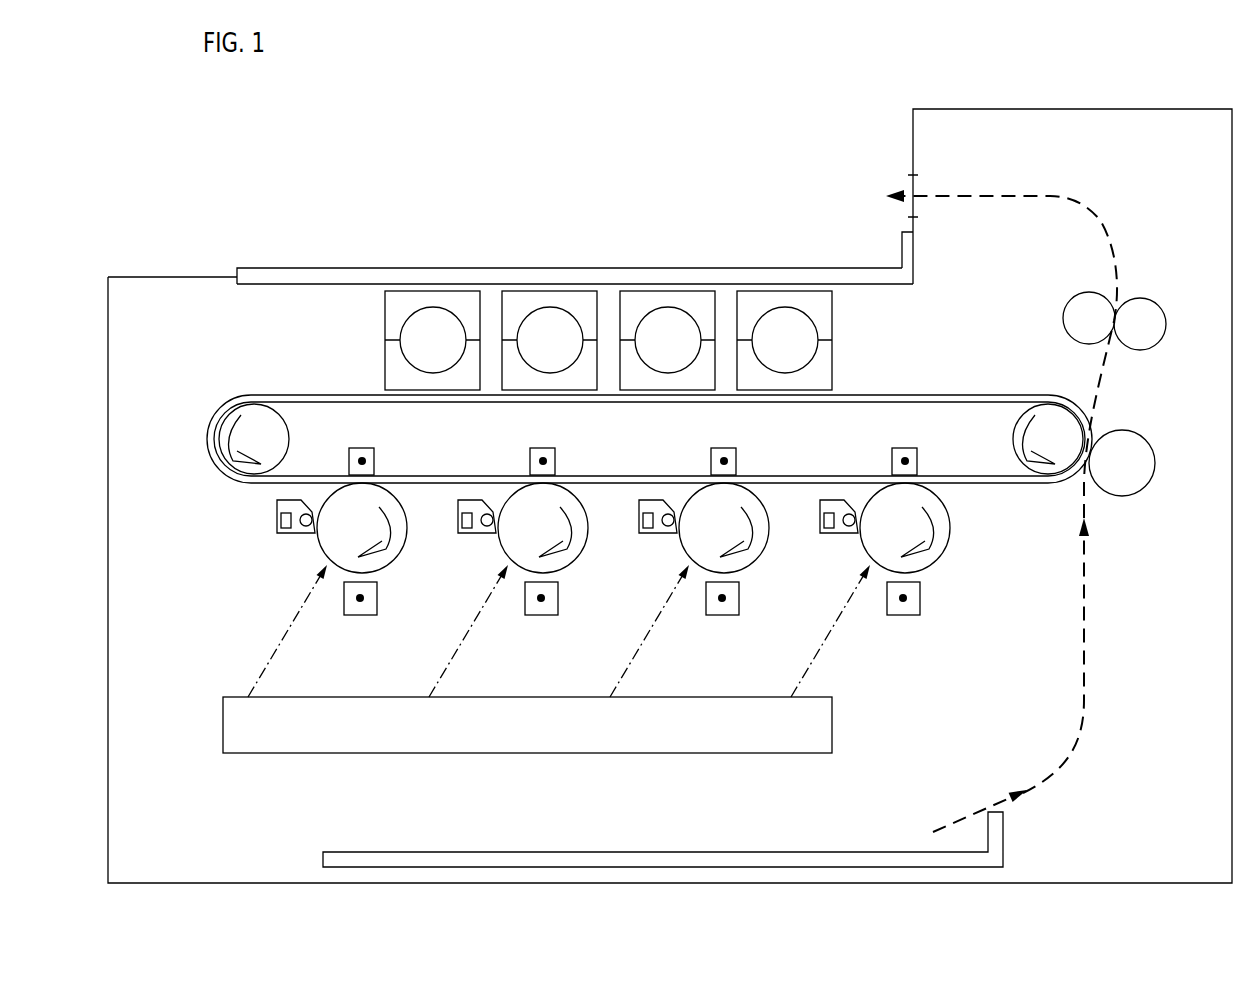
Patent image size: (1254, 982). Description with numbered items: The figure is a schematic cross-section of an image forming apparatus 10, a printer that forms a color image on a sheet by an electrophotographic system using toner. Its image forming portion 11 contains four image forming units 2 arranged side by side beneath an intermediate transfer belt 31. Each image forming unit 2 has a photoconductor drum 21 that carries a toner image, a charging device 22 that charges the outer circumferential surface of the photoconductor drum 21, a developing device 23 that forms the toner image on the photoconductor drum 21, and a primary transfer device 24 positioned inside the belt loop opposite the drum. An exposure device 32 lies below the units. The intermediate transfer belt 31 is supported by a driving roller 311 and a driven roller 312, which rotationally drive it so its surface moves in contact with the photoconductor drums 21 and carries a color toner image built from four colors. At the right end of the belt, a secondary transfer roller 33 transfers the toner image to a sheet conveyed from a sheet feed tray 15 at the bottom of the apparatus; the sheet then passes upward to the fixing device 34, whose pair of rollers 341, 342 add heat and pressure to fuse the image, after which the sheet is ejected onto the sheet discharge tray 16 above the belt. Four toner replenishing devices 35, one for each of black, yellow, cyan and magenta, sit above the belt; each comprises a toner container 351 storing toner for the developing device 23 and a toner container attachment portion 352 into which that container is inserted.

The image forming apparatus 10 is at (192, 238).
The image forming portion 11 is at (636, 404).
The sheet discharge tray 16 is at (355, 268).
The toner replenishing device 35 is at (617, 304).
The toner container 351 is at (601, 302).
The toner container attachment portion 352 is at (617, 310).
The intermediate transfer belt 31 is at (942, 395).
The driving roller 311 is at (1022, 414).
The driven roller 312 is at (286, 404).
The primary transfer device 24 is at (655, 444).
The image forming unit 2 is at (597, 571).
The photoconductor drum 21 is at (642, 509).
The charging device 22 is at (633, 629).
The developing device 23 is at (543, 516).
The exposure device 32 is at (222, 728).
The sheet feed tray 15 is at (740, 852).
The secondary transfer roller 33 is at (1138, 437).
The fixing device 34 is at (1114, 297).
The heating roller 341 is at (1062, 310).
The pressure roller 342 is at (1168, 310).